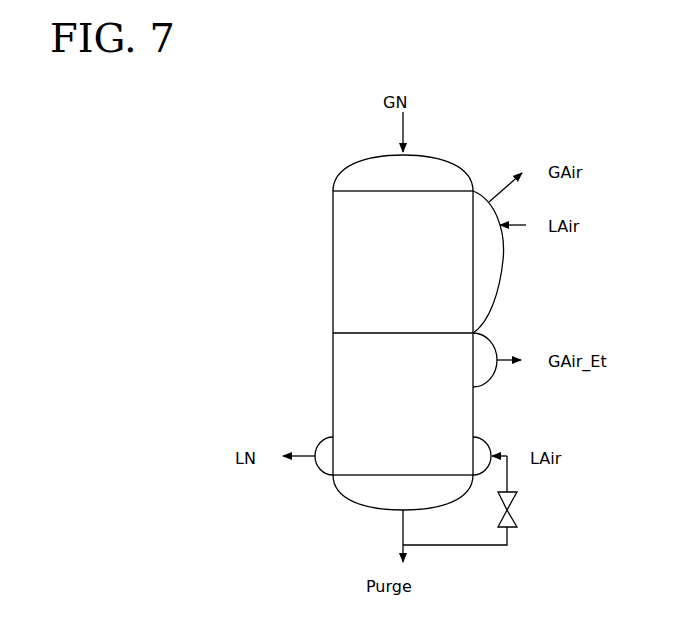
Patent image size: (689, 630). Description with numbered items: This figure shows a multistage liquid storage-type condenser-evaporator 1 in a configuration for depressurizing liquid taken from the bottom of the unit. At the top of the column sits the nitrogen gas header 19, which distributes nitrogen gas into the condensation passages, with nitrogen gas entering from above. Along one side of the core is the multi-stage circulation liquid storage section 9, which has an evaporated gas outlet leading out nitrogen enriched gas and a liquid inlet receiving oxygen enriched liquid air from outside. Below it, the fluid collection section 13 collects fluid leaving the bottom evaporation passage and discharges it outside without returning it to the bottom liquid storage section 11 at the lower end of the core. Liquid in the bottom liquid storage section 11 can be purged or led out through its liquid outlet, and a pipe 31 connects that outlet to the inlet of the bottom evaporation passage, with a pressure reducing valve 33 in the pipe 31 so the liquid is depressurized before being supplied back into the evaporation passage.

The multistage liquid storage-type condenser-evaporator 1 is at (494, 100).
The circulation liquid storage section 9 is at (502, 273).
The bottom liquid storage section 11 is at (357, 497).
The fluid collection section 13 is at (490, 380).
The nitrogen gas header 19 is at (352, 164).
The pipe 31 is at (470, 546).
The pressure reducing valve 33 is at (515, 516).